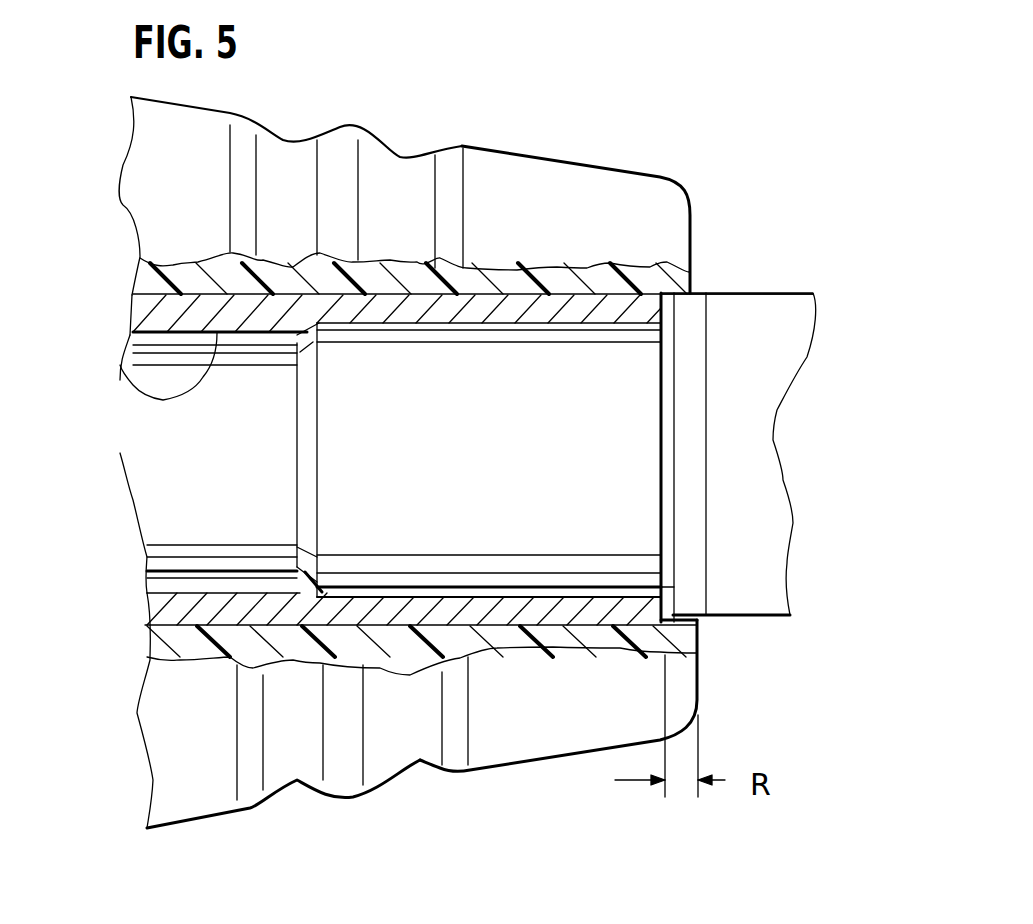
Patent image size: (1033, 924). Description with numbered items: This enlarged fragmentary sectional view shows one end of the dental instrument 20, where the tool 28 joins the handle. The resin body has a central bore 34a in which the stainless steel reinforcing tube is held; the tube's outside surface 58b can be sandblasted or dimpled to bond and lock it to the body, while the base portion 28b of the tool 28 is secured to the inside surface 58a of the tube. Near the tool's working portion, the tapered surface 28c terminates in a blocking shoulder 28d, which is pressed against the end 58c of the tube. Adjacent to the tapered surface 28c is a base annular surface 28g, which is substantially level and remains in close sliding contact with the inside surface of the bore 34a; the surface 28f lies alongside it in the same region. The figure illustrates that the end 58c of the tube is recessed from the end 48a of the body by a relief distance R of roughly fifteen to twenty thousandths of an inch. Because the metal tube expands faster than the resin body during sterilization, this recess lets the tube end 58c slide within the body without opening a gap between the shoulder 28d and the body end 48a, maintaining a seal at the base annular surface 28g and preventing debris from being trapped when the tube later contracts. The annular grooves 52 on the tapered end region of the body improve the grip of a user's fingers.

The annular grooves 52 is at (283, 140).
The dental instrument 20 is at (448, 133).
The central bore 34a is at (633, 293).
The tapered surface 28c is at (712, 293).
The tool 28 is at (748, 291).
The base annular surface 28g is at (668, 362).
The sleeve outer surface line 28f is at (697, 392).
The base portion 28b is at (608, 462).
The blocking shoulder 28d is at (663, 547).
The end of the tube 58c is at (750, 620).
The end of the body 48a is at (703, 683).
The outside surface of the tube 58b is at (213, 297).
The inside surface of the tube 58a is at (113, 410).